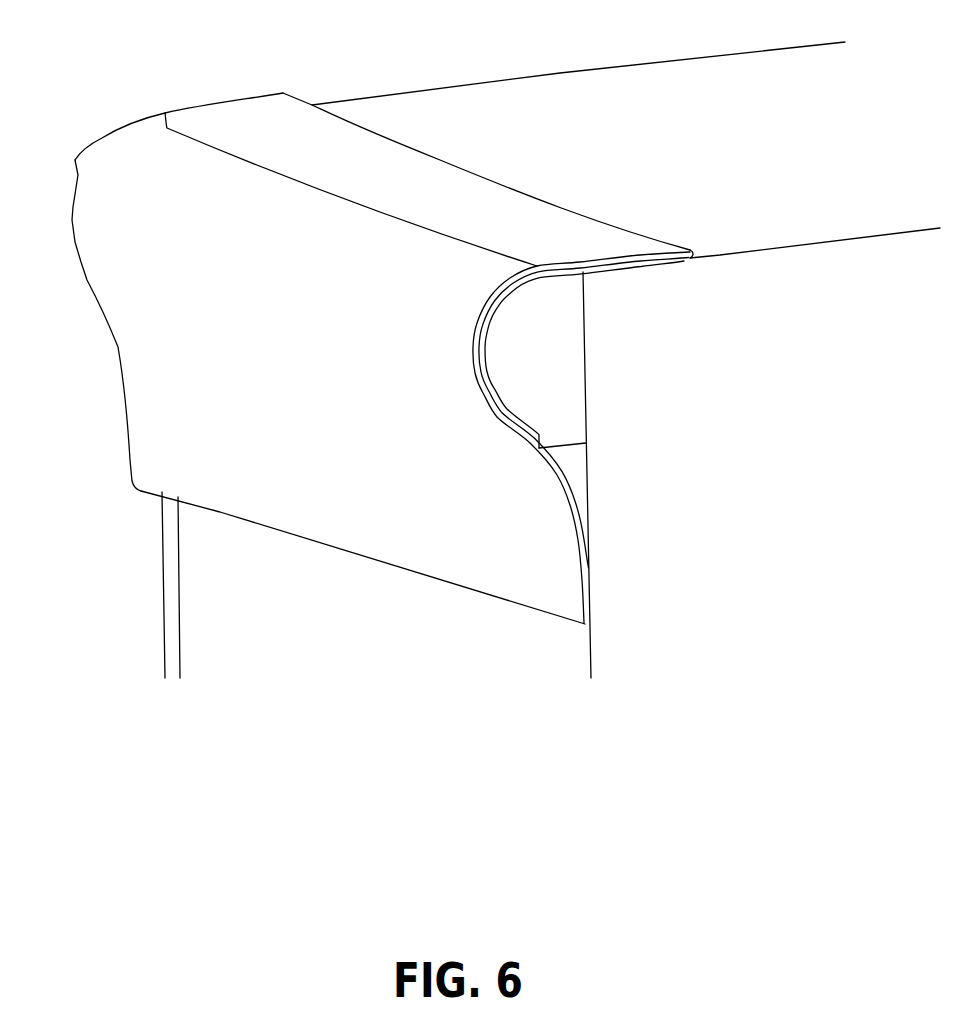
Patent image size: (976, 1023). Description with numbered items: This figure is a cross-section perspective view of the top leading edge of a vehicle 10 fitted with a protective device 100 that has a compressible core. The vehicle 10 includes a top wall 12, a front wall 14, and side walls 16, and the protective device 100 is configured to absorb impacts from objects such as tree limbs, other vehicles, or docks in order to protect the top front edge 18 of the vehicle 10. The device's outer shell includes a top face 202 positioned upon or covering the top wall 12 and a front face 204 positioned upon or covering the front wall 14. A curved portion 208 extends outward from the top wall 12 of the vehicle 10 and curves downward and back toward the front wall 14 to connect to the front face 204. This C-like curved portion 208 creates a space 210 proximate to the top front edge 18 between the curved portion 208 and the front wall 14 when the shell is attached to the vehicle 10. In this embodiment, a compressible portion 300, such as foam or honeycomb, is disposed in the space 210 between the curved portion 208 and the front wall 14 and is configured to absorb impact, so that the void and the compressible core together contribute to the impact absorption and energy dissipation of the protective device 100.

The vehicle 10 is at (163, 587).
The top wall 12 is at (682, 125).
The front wall 14 is at (217, 645).
The side walls 16 is at (663, 590).
The top front edge 18 is at (664, 253).
The protective device 100 is at (110, 107).
The top face 202 is at (373, 153).
The front face 204 is at (247, 488).
The curved portion 208 is at (84, 272).
The space 210 is at (573, 473).
The compressible portion 300 is at (555, 353).